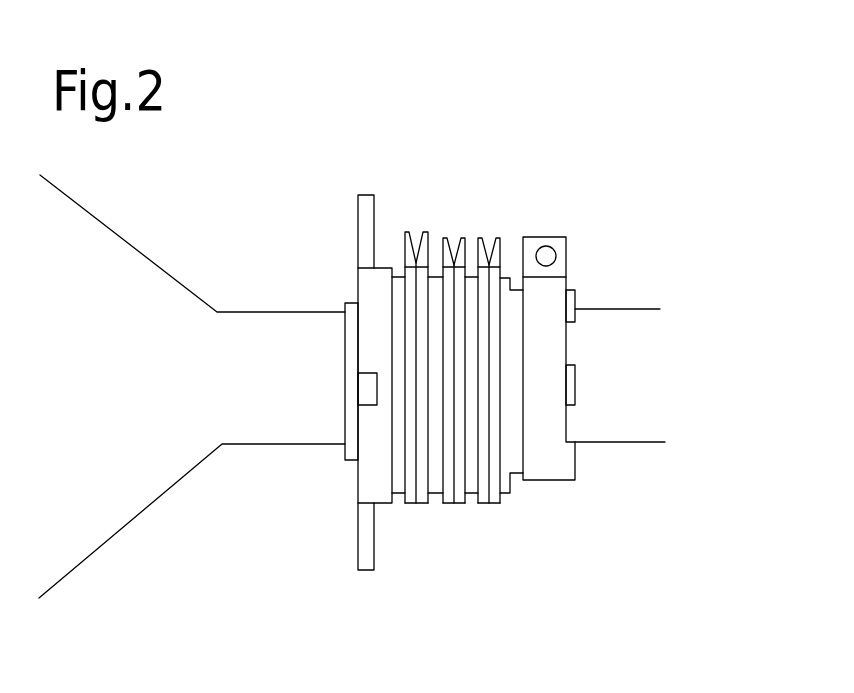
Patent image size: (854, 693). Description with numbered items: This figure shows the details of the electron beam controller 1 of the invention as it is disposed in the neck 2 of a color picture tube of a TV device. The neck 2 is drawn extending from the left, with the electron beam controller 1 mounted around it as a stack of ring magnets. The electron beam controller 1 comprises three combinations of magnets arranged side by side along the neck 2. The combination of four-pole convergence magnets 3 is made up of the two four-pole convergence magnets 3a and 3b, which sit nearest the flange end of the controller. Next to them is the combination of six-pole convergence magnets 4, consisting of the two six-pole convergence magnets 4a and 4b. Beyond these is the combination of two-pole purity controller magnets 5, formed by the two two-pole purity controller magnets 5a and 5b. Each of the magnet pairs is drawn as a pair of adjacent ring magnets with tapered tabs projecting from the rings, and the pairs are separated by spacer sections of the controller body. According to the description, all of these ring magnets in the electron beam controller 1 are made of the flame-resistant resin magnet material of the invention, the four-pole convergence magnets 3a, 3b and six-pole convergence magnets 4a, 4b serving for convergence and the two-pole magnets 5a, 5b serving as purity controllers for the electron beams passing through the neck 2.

The electron beam controller 1 is at (491, 372).
The neck 2 is at (257, 427).
The combination of four-pole convergence magnets 3 is at (378, 286).
The four-pole convergence magnet 3a is at (409, 231).
The four-pole convergence magnet 3b is at (422, 309).
The combination of six-pole convergence magnets 4 is at (455, 458).
The six-pole convergence magnet 4a is at (443, 503).
The six-pole convergence magnet 4b is at (457, 503).
The combination of two-pole purity controller magnets 5 is at (516, 285).
The two-pole purity controller magnet 5a is at (482, 238).
The two-pole purity controller magnet 5b is at (497, 238).